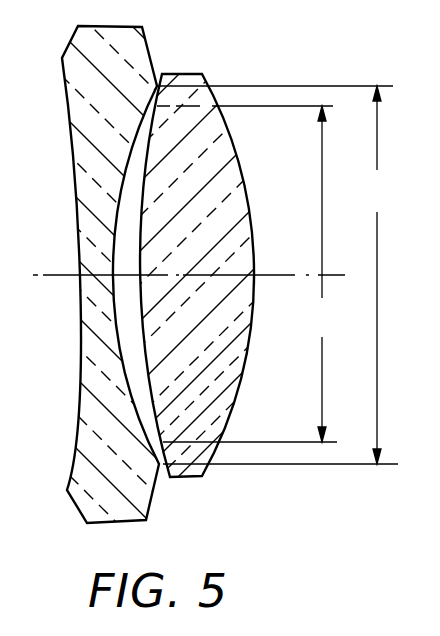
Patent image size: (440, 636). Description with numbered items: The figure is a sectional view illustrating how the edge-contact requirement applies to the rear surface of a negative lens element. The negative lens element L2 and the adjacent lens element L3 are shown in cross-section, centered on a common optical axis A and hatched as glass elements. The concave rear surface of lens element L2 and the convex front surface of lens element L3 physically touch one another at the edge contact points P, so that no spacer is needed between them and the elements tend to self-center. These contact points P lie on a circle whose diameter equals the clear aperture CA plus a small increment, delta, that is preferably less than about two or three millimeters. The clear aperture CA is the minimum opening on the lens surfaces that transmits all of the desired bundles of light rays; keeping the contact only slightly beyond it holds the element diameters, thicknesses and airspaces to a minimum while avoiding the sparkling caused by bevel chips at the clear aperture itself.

The lens element L2 is at (98, 421).
The lens element L3 is at (207, 364).
The optical axis A is at (62, 273).
The edge contact points P is at (157, 86).
The clear aperture CA is at (249, 274).